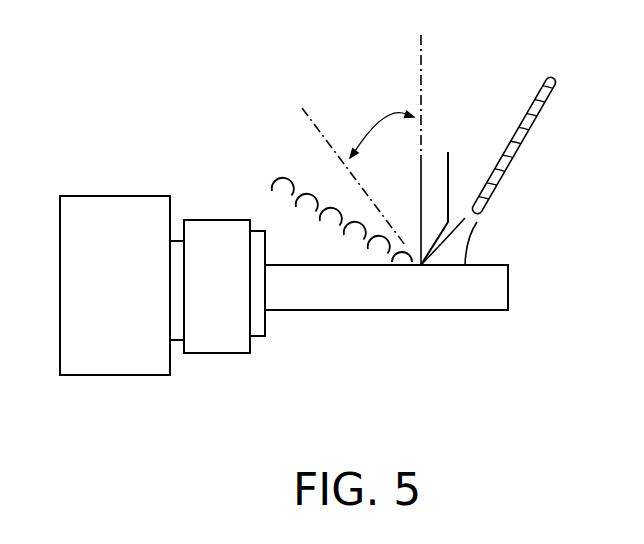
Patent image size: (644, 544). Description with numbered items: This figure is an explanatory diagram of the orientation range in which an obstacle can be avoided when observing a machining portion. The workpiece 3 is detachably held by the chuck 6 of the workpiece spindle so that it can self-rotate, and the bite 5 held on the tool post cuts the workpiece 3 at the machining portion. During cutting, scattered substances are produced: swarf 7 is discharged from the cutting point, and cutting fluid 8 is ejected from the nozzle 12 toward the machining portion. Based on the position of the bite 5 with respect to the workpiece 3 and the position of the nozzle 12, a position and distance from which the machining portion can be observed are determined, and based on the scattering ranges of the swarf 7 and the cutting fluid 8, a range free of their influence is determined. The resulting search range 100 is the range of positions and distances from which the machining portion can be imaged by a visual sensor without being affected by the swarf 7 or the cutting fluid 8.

The workpiece 3 is at (465, 310).
The bite 5 is at (448, 152).
The chuck 6 is at (215, 353).
The swarf 7 is at (281, 159).
The cutting fluid 8 is at (486, 236).
The nozzle 12 is at (535, 132).
The search range 100 is at (367, 120).